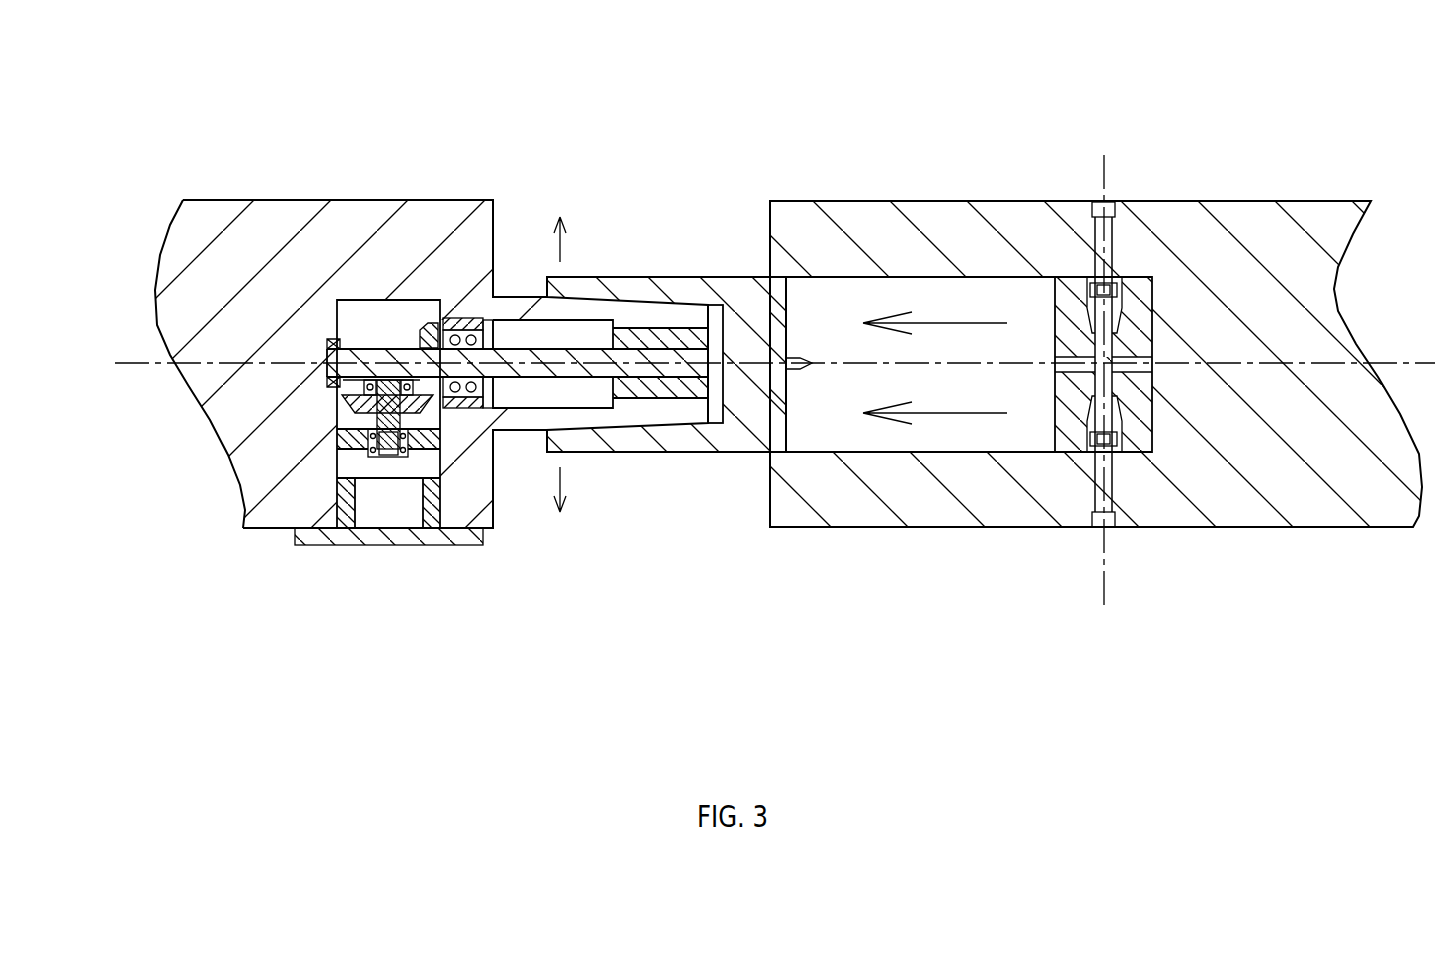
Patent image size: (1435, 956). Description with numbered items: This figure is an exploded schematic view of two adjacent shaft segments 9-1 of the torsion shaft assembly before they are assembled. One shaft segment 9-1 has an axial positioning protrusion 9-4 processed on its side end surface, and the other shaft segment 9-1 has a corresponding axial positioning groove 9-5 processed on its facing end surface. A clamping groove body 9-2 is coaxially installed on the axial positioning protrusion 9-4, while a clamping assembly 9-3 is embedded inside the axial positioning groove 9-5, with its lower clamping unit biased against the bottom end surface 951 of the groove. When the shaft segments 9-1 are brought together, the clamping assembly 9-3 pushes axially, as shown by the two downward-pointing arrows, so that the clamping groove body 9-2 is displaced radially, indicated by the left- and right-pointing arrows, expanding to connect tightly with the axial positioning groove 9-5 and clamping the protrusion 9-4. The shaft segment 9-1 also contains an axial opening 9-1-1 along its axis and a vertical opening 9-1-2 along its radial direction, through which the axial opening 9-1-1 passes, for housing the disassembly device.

The shaft segment 9-1 is at (323, 200).
The axial opening 9-1-1 is at (540, 330).
The vertical opening 9-1-2 is at (410, 462).
The clamping groove body 9-2 is at (640, 287).
The clamping assembly 9-3 is at (1052, 300).
The axial positioning protrusion 9-4 is at (663, 403).
The axial positioning groove 9-5 is at (1037, 423).
The bottom end surface 951 is at (1155, 417).